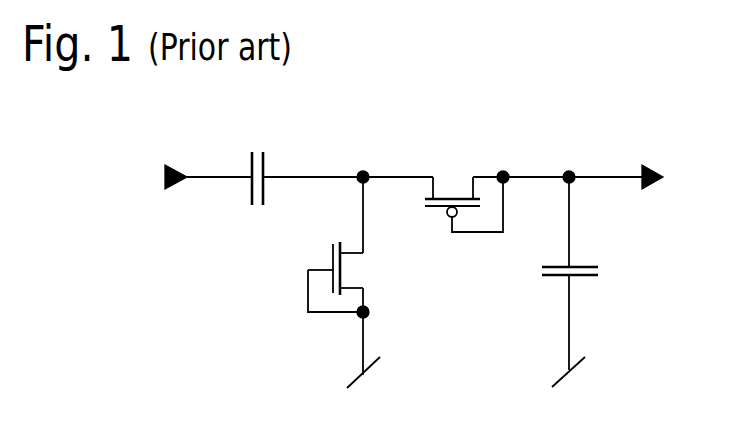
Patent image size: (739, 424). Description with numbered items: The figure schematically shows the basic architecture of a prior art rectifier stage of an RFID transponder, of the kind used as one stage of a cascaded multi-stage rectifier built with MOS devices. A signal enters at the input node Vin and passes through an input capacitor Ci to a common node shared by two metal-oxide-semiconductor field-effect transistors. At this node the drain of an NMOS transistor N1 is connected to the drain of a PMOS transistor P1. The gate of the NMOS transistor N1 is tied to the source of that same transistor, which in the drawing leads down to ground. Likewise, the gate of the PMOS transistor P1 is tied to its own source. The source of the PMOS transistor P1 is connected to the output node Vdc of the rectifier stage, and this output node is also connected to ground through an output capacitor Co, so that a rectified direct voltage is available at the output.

The input node Vin is at (180, 158).
The input capacitor Ci is at (275, 170).
The PMOS transistor P1 is at (464, 182).
The NMOS transistor N1 is at (355, 315).
The output capacitor Co is at (581, 307).
The output node Vdc is at (686, 173).